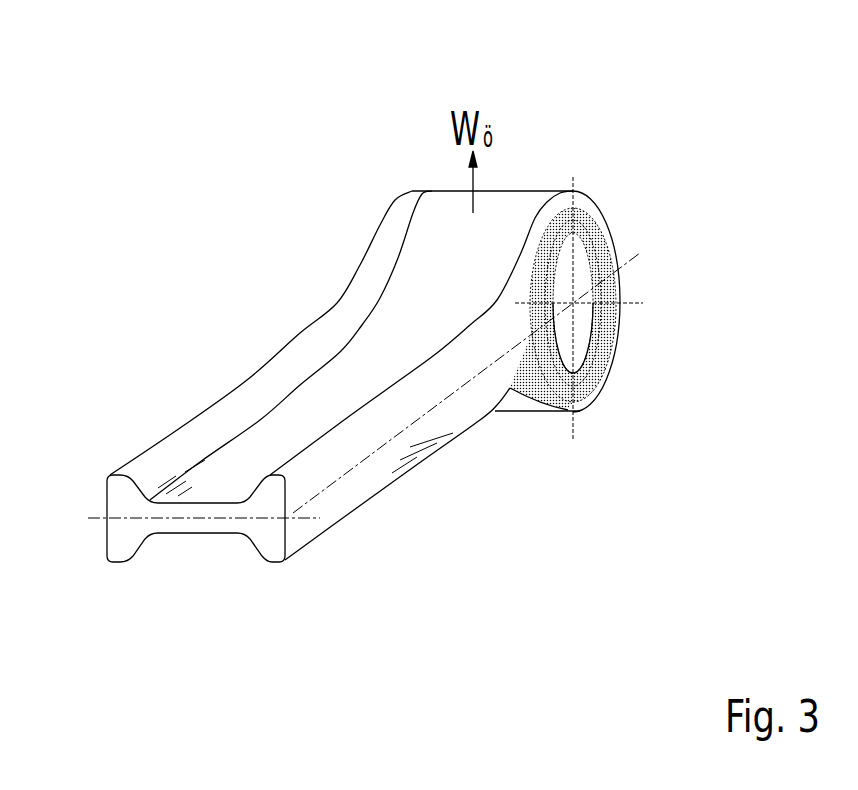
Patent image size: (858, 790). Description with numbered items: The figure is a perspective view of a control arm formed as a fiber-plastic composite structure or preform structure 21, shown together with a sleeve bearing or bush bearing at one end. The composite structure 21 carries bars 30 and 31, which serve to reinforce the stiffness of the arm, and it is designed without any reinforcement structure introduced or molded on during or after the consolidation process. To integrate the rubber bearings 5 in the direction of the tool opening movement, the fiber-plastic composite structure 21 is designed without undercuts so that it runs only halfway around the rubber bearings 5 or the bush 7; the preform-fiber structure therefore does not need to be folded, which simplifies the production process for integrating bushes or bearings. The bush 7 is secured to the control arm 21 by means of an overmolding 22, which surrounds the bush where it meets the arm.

The bar 30 is at (134, 446).
The fiber-plastic composite structure 21 is at (242, 410).
The bar 31 is at (277, 567).
The overmolding 22 is at (552, 350).
The rubber bearing 5 is at (557, 400).
The bush 7 is at (613, 350).